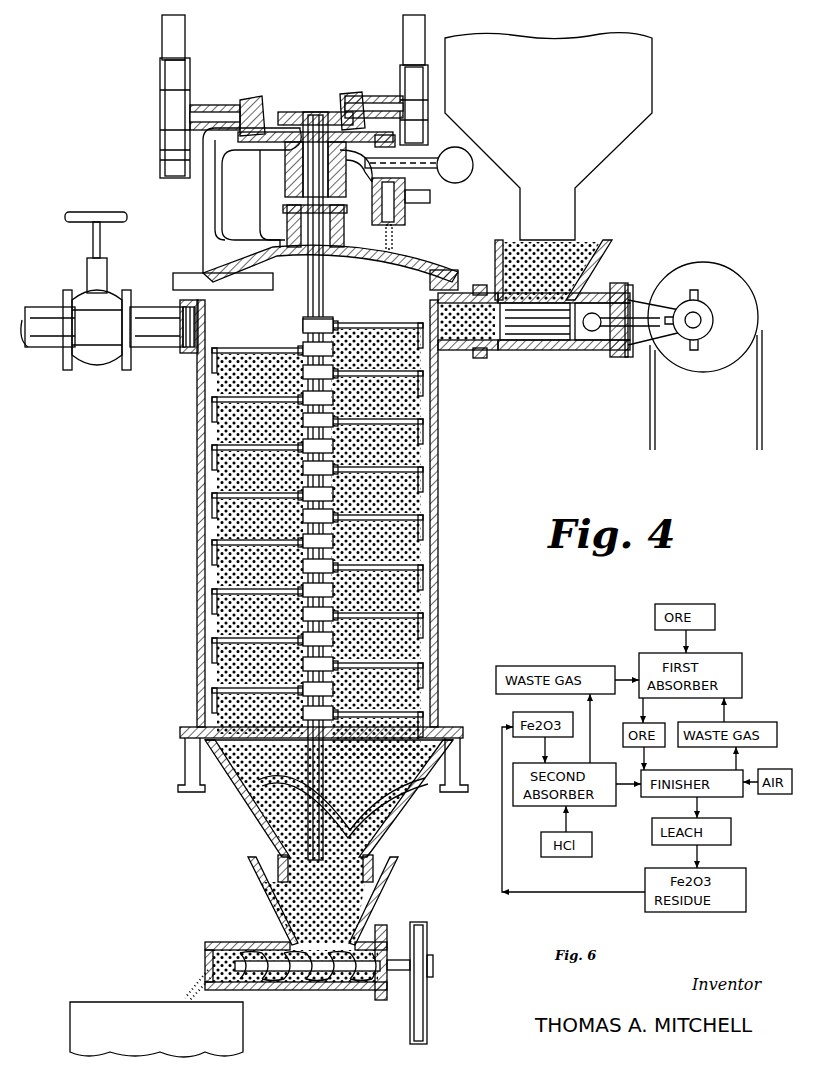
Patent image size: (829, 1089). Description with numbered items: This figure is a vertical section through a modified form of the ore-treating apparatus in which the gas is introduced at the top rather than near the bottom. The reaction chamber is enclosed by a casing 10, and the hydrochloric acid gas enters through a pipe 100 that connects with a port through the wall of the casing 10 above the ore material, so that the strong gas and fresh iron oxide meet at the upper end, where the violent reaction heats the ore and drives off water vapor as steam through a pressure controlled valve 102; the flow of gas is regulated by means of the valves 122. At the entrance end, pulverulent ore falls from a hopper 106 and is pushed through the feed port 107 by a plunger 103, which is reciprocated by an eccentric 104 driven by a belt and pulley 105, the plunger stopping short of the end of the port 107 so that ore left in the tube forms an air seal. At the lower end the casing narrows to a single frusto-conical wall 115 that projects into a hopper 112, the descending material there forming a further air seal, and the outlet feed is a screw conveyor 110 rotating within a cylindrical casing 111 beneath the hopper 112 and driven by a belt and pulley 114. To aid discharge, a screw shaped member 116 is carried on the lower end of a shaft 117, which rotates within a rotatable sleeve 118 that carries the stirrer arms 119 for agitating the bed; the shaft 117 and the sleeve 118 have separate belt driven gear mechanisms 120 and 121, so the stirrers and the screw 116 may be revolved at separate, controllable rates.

The casing 10 is at (197, 455).
The pipe 100 is at (158, 340).
The pressure controlled valve 102 is at (405, 210).
The plunger 103 is at (548, 330).
The eccentric 104 is at (686, 345).
The belt and pulley 105 is at (705, 356).
The hopper 106 is at (594, 256).
The feed port 107 is at (462, 350).
The screw conveyor 110 is at (322, 985).
The cylindrical casing 111 is at (244, 955).
The hopper 112 is at (268, 890).
The belt and pulley 114 is at (428, 944).
The wall 115 is at (372, 860).
The screw shaped member 116 is at (343, 807).
The shaft 117 is at (322, 110).
The rotatable sleeve 118 is at (308, 300).
The stirrer arms 119 is at (268, 350).
The belt driven gear mechanism 120 is at (384, 84).
The belt driven gear mechanism 121 is at (248, 97).
The valves 122 is at (88, 280).